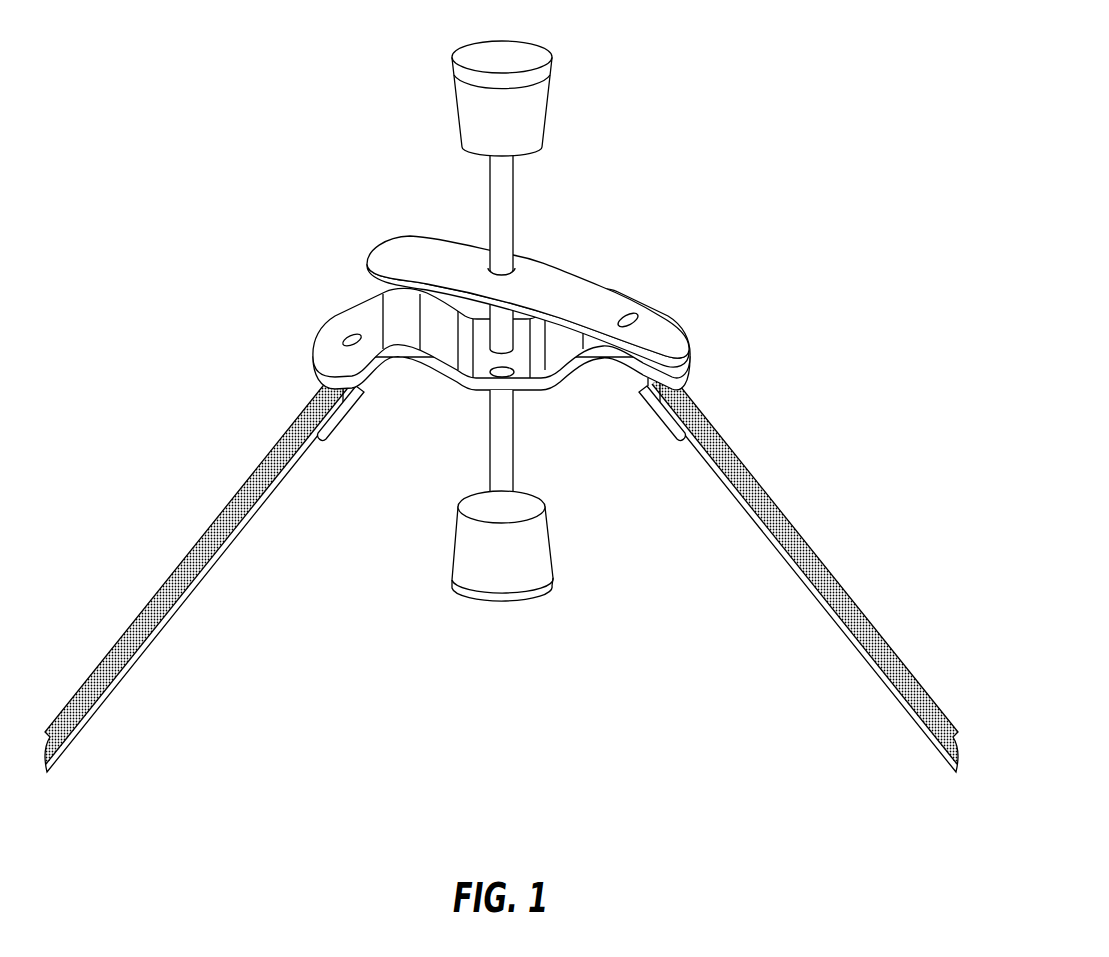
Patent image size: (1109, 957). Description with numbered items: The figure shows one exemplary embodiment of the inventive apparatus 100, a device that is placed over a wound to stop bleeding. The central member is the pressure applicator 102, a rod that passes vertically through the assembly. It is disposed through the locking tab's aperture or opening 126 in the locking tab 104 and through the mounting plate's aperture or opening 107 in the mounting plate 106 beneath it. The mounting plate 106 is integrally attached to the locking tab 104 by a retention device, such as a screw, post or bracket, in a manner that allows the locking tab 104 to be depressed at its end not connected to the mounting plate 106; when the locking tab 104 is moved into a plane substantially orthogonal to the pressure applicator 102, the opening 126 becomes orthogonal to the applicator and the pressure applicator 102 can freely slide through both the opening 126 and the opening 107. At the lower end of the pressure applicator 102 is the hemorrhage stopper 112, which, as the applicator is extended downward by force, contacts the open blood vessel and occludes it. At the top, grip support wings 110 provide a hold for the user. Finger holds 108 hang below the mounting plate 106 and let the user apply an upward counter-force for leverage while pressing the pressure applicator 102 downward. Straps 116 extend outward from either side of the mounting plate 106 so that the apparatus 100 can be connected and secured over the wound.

The inventive apparatus 100 is at (502, 400).
The pressure applicator 102 is at (516, 194).
The locking tab 104 is at (587, 283).
The mounting plate 106 is at (402, 310).
The mounting plate's aperture or opening 107 is at (522, 354).
The finger hold 108 is at (403, 363).
The grip support wings 110 is at (549, 107).
The hemorrhage stopper 112 is at (554, 580).
The straps 116 is at (287, 440).
The locking tab's aperture or opening 126 is at (486, 273).